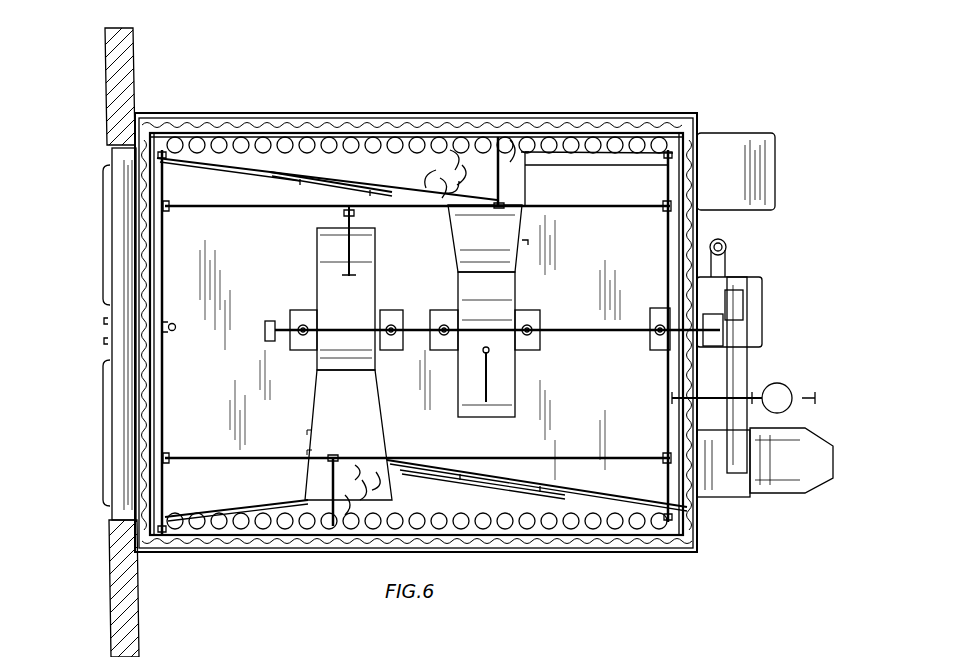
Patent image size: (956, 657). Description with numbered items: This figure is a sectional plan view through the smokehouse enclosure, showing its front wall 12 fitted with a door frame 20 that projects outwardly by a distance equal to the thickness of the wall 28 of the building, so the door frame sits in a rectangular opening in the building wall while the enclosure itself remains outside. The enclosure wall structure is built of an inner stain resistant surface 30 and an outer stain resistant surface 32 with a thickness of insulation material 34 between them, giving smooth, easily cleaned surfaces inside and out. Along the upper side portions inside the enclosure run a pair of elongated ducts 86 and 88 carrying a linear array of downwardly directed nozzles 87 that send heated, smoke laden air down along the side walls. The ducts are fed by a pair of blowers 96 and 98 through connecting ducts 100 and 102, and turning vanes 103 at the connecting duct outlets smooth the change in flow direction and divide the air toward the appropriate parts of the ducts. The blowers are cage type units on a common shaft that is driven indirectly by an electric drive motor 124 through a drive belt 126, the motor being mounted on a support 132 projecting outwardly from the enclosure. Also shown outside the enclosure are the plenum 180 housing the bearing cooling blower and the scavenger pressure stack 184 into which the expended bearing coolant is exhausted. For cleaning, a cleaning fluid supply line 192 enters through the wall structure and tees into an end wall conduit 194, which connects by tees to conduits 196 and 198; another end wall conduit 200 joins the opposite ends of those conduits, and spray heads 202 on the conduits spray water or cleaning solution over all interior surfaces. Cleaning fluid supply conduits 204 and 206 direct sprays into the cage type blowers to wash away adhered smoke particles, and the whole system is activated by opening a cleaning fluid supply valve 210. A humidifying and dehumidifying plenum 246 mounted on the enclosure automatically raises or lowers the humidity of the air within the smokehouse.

The front wall 12 is at (134, 475).
The door frame 20 is at (114, 208).
The wall of a building 28 is at (128, 66).
The inner stain resistant surface 30 is at (450, 127).
The outer stain resistant surface 32 is at (512, 116).
The insulation material 34 is at (594, 118).
The elongated duct 86 is at (268, 165).
The downwardly directed nozzles 87 is at (374, 125).
The elongated duct 88 is at (290, 510).
The blower 96 is at (500, 292).
The blower 98 is at (320, 258).
The connecting duct 100 is at (456, 258).
The connecting duct 102 is at (386, 403).
The turning vanes 103 is at (440, 185).
The electric drive motor 124 is at (806, 480).
The drive belt 126 is at (746, 365).
The support 132 is at (716, 455).
The plenum 180 is at (764, 290).
The scavenger pressure stack 184 is at (728, 247).
The cleaning fluid supply line 192 is at (712, 395).
The end wall conduit 194 is at (670, 368).
The conduit 196 is at (622, 205).
The conduit 198 is at (618, 446).
The end wall conduit 200 is at (165, 275).
The spray heads 202 is at (176, 158).
The cleaning fluid supply conduit 204 is at (492, 398).
The cleaning fluid supply conduit 206 is at (352, 232).
The cleaning fluid supply valve 210 is at (790, 406).
The humidifying and dehumidifying plenum 246 is at (768, 163).